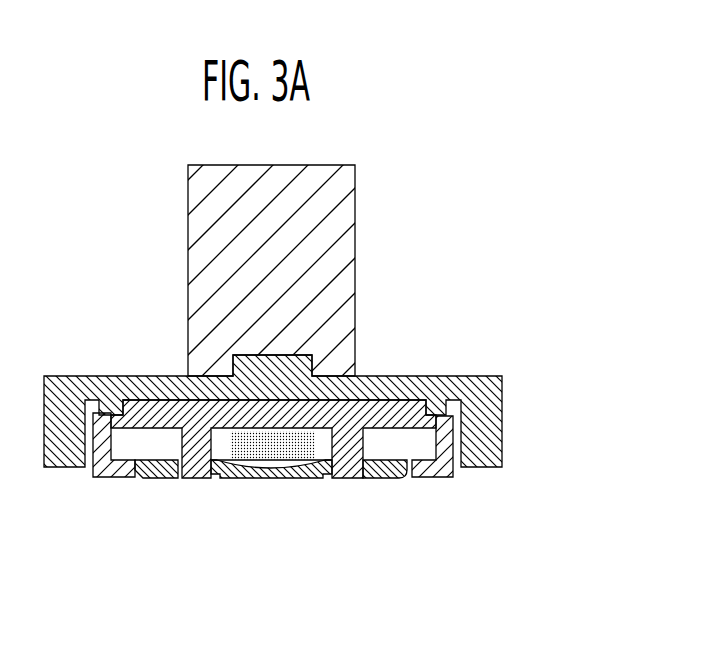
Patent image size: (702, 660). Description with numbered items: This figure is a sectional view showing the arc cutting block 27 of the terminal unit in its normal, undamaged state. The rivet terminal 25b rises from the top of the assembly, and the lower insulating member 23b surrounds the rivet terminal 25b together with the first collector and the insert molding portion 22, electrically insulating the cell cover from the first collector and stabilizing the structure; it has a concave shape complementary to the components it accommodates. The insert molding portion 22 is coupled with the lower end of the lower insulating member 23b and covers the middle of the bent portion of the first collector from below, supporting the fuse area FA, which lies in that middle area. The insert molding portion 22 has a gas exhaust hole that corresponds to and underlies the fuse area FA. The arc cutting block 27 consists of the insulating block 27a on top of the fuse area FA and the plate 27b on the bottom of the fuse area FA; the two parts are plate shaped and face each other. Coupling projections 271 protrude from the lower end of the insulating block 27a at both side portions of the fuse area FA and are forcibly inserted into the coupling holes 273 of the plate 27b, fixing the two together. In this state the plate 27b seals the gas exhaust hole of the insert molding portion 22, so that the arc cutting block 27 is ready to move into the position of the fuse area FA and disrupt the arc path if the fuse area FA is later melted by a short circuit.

The insert molding portion 22 is at (447, 472).
The lower insulating member 23b is at (493, 431).
The rivet terminal 25b is at (343, 288).
The arc cutting block 27 is at (273, 503).
The insulating block 27a is at (390, 480).
The plate 27b is at (312, 480).
The coupling projection 271 is at (200, 482).
The coupling hole 273 is at (178, 482).
The fuse area FA is at (272, 502).